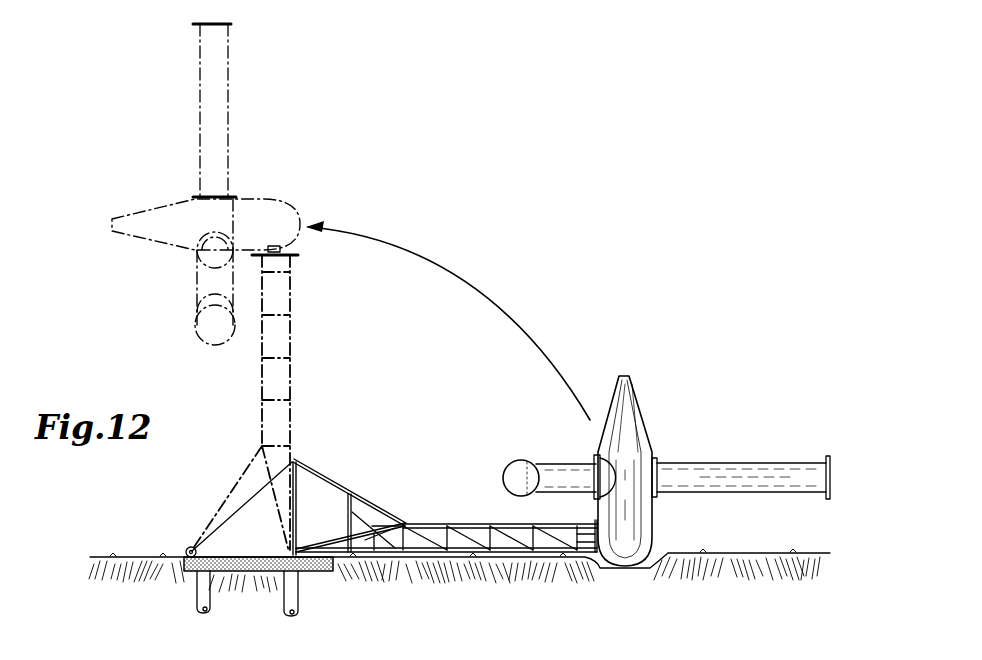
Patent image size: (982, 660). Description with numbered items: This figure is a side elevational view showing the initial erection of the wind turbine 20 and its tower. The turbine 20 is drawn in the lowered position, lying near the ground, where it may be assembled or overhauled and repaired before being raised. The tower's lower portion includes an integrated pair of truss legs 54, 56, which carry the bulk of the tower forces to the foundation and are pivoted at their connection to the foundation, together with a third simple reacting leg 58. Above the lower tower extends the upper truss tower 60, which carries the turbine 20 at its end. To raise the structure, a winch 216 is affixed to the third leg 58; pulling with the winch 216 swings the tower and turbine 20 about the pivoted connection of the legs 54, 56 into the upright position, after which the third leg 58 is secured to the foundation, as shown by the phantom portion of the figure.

The wind turbine 20 is at (288, 180).
The winch 216 is at (189, 546).
The truss leg 54 is at (334, 541).
The truss leg 56 is at (375, 526).
The third simple reacting leg 58 is at (330, 482).
The upper truss tower 60 is at (460, 524).